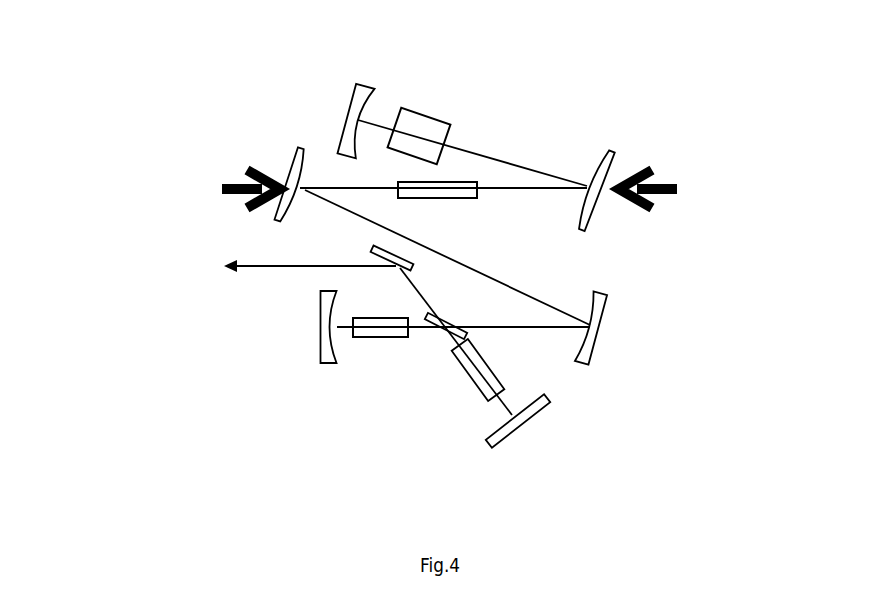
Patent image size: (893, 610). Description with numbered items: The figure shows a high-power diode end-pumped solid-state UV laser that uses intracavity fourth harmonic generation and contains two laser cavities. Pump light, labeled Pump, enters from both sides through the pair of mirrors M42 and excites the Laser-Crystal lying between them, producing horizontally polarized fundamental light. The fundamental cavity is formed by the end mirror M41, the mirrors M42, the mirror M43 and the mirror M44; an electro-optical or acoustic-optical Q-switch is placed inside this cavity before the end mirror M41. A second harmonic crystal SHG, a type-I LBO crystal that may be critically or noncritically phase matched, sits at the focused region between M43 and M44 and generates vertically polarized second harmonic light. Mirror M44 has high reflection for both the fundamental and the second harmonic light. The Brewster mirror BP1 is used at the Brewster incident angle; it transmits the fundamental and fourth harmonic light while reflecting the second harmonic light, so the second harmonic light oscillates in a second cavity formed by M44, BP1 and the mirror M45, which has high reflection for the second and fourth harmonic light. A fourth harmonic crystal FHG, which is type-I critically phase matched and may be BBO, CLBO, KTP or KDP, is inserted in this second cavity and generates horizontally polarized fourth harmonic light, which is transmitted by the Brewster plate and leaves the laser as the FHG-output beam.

The end mirror M41 is at (355, 107).
The cavity mirror M42 is at (446, 171).
The cavity mirror M43 is at (624, 327).
The cavity mirror M44 is at (298, 327).
The cavity mirror M45 is at (546, 427).
The Brewster mirror BP1 is at (431, 339).
The element Q-switch is at (434, 112).
The laser crystal Laser-Crystal is at (468, 164).
The second harmonic crystal SHG is at (378, 346).
The fourth harmonic crystal FHG is at (467, 370).
The FHG output FHG-output is at (245, 271).
The pump Pump is at (447, 188).